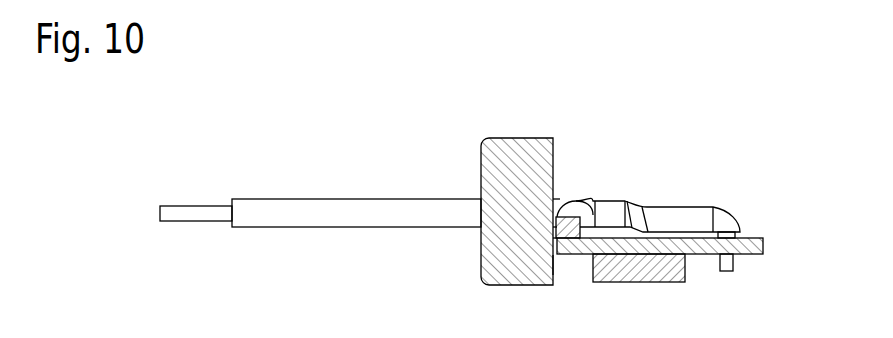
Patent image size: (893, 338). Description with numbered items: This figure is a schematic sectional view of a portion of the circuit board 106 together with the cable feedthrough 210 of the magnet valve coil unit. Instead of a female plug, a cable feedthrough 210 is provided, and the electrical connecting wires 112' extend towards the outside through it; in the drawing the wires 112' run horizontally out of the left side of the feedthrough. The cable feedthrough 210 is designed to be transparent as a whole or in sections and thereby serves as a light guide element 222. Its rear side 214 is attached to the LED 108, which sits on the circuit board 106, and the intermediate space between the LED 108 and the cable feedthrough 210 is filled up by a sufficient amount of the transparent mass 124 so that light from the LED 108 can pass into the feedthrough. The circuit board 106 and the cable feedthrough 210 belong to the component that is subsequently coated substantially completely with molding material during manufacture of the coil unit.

The cable feedthrough 210 is at (485, 130).
The transparent mass 124 is at (562, 226).
The LED 108 is at (586, 229).
The electrical connecting wires 112' is at (320, 177).
The light guide element 222 is at (543, 238).
The rear side 214 is at (557, 263).
The circuit board 106 is at (652, 249).